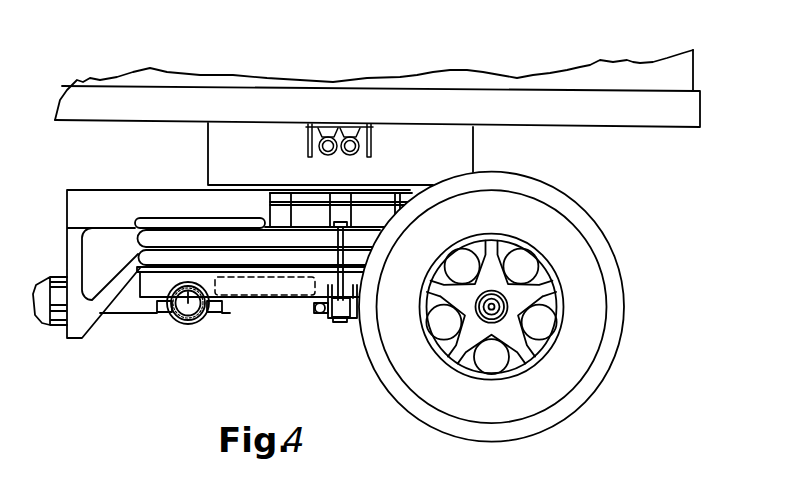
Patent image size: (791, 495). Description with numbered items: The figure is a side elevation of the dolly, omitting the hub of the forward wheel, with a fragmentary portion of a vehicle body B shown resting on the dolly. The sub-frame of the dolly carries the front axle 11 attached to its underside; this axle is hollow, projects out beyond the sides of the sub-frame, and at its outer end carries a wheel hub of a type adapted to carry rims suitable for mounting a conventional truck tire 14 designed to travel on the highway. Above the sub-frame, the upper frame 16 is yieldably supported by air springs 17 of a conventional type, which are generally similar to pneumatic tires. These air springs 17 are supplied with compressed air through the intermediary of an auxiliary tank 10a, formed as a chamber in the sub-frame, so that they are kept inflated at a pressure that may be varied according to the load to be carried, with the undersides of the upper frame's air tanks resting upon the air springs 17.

The vehicle body B is at (647, 68).
The upper frame 16 is at (133, 195).
The air springs 17 is at (283, 237).
The auxiliary tank 10a is at (292, 295).
The front axle 11 is at (181, 316).
The truck tire 14 is at (620, 288).